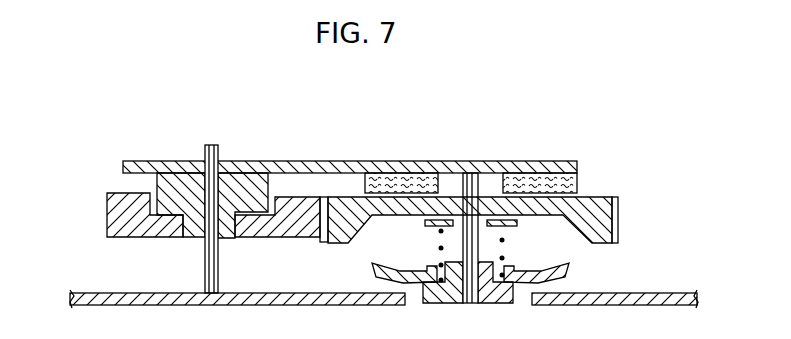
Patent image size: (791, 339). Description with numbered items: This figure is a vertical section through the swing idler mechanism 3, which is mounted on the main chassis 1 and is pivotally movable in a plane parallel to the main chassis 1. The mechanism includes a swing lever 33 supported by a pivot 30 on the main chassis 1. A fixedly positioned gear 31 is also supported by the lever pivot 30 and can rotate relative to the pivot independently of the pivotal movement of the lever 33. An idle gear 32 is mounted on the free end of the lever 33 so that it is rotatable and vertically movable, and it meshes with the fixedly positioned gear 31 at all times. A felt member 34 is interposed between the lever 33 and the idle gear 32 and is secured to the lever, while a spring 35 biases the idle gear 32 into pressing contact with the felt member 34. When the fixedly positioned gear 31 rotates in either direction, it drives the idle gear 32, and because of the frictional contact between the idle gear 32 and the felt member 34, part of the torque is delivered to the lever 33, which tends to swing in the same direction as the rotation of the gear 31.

The main chassis 1 is at (655, 293).
The swing idler mechanism 3 is at (531, 92).
The pivot 30 is at (205, 148).
The fixedly positioned gear 31 is at (143, 238).
The idle gear 32 is at (591, 218).
The swing lever 33 is at (283, 170).
The felt member 34 is at (578, 176).
The spring 35 is at (505, 258).